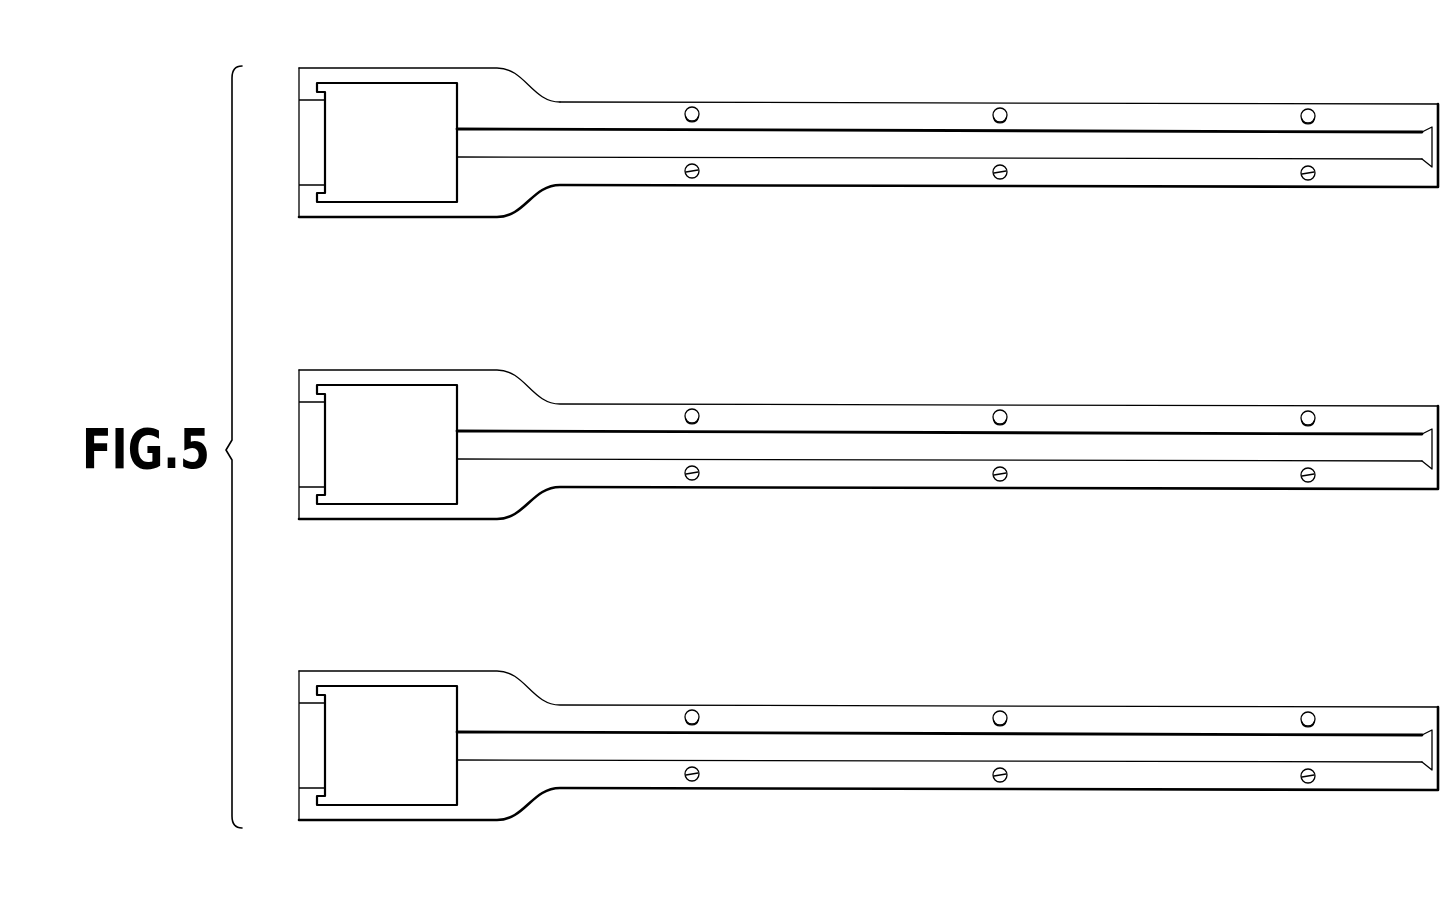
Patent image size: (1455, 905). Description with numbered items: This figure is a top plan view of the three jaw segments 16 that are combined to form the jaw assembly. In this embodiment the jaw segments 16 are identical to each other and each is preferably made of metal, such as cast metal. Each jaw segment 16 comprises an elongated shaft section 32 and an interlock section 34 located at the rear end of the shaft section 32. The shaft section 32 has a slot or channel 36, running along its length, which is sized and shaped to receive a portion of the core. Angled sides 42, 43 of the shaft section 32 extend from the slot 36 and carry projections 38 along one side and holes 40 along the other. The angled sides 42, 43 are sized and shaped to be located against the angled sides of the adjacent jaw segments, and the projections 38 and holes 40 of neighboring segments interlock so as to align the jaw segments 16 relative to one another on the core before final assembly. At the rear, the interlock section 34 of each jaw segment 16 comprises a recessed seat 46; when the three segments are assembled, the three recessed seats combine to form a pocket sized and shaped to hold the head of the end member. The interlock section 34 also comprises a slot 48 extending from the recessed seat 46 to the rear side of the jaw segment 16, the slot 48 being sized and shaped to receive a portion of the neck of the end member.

The jaw segment 16 is at (1142, 190).
The shaft section 32 is at (850, 102).
The interlock section 34 is at (389, 67).
The slot 36 is at (753, 143).
The projection 38 is at (688, 108).
The hole 40 is at (690, 177).
The angled side 42 is at (952, 112).
The angled side 43 is at (860, 188).
The recessed seat 46 is at (387, 195).
The slot 48 is at (308, 138).